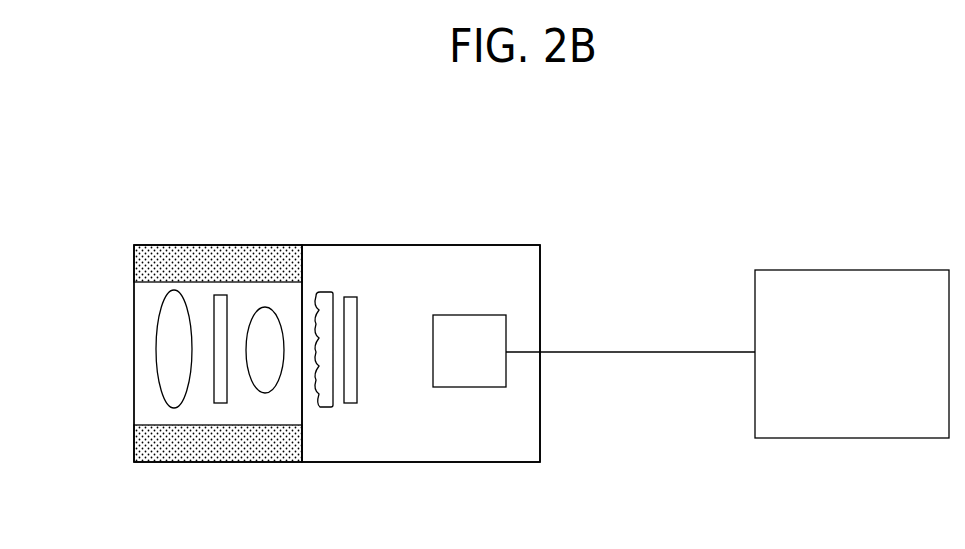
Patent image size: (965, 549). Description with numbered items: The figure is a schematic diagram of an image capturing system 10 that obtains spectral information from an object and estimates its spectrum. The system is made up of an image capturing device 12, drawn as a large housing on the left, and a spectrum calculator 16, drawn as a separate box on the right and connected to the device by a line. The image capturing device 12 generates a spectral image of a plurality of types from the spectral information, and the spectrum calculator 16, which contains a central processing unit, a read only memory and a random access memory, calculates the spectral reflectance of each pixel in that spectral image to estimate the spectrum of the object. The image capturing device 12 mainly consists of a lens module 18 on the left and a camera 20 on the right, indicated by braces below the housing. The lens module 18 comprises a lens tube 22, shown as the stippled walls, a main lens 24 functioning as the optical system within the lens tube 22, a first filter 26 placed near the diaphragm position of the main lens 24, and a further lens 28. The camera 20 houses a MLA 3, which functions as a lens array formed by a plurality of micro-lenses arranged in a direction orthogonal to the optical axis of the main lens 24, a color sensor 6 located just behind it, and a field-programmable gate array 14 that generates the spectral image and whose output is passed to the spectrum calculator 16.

The image capturing system 10 is at (512, 155).
The image capturing device 12 is at (320, 224).
The field-programmable gate array (FPGA) 14 is at (478, 315).
The spectrum calculator 16 is at (890, 270).
The lens module 18 is at (134, 470).
The camera 20 is at (540, 470).
The lens tube 22 is at (176, 262).
The main lens 24 is at (157, 310).
The first filter 26 is at (219, 295).
The lens 28 is at (262, 307).
The MLA 3 is at (325, 290).
The color sensor 6 is at (352, 296).